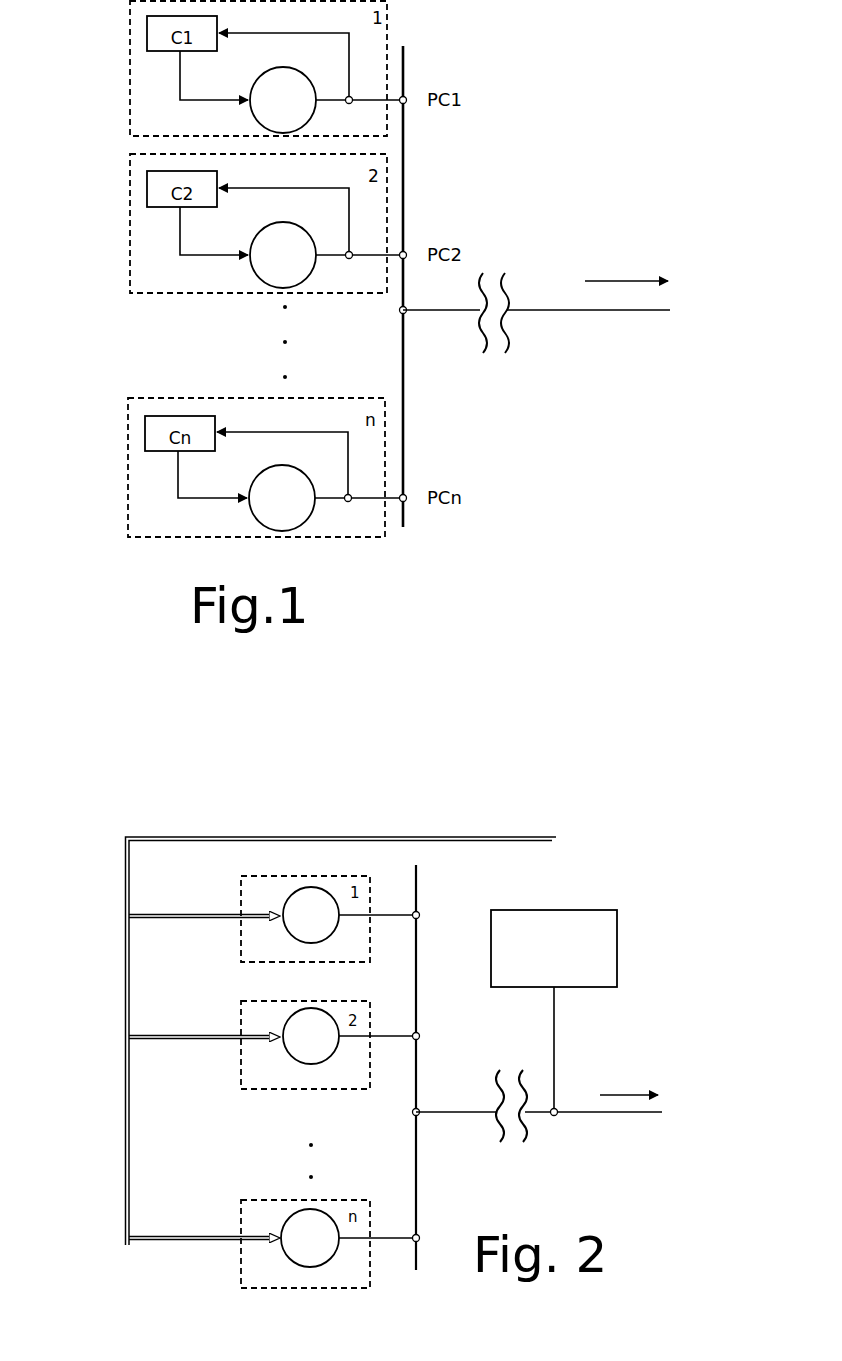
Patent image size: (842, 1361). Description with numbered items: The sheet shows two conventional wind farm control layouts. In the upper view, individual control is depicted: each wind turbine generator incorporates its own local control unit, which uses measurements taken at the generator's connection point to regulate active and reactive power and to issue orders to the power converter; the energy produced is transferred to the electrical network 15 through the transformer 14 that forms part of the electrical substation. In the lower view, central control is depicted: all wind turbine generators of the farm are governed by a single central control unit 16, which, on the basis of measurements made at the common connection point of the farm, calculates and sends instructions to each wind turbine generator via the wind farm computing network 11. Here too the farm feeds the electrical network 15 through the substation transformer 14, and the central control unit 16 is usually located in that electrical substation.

In FIG. 2, the wind farm computing network 11 is at (120, 1024).
In FIG. 1, the transformer 14 is at (499, 357).
In FIG. 2, the transformer 14 is at (512, 1149).
In FIG. 1, the electrical network 15 is at (607, 302).
In FIG. 2, the electrical network 15 is at (612, 1103).
In FIG. 2, the central control unit 16 is at (605, 946).